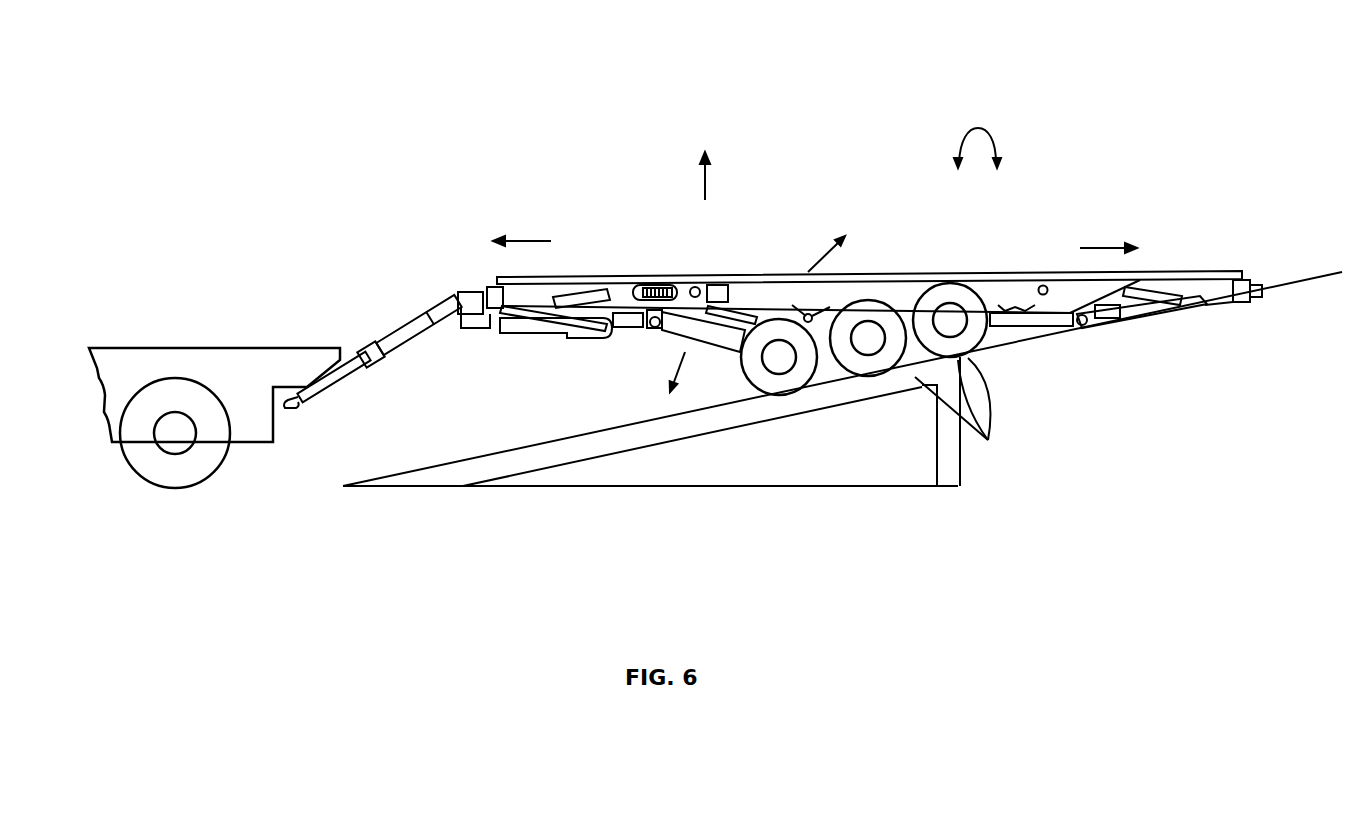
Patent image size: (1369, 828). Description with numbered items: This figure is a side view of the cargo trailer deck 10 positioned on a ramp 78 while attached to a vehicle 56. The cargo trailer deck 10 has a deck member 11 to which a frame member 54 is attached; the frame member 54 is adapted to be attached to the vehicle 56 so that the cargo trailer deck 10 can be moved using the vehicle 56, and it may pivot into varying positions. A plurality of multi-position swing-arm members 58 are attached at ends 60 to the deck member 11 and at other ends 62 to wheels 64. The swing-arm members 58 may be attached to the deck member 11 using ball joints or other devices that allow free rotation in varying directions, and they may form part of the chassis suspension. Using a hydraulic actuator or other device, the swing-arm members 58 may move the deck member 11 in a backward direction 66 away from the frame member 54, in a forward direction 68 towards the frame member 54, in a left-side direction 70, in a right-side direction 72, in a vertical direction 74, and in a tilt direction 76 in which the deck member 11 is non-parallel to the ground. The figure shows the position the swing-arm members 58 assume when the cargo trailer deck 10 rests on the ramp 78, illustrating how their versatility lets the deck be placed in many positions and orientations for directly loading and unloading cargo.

The cargo trailer deck 10 is at (855, 152).
The deck member 11 is at (900, 277).
The frame member 54 is at (370, 350).
The vehicle 56 is at (168, 348).
The swing-arm members 58 is at (737, 345).
The ends 60 is at (652, 330).
The other ends 62 is at (745, 350).
The wheels 64 is at (955, 413).
The backward direction 66 is at (1108, 235).
The forward direction 68 is at (522, 224).
The left-side direction 70 is at (689, 379).
The right-side direction 72 is at (839, 238).
The vertical direction 74 is at (722, 174).
The tilt direction 76 is at (977, 135).
The ramp 78 is at (780, 473).